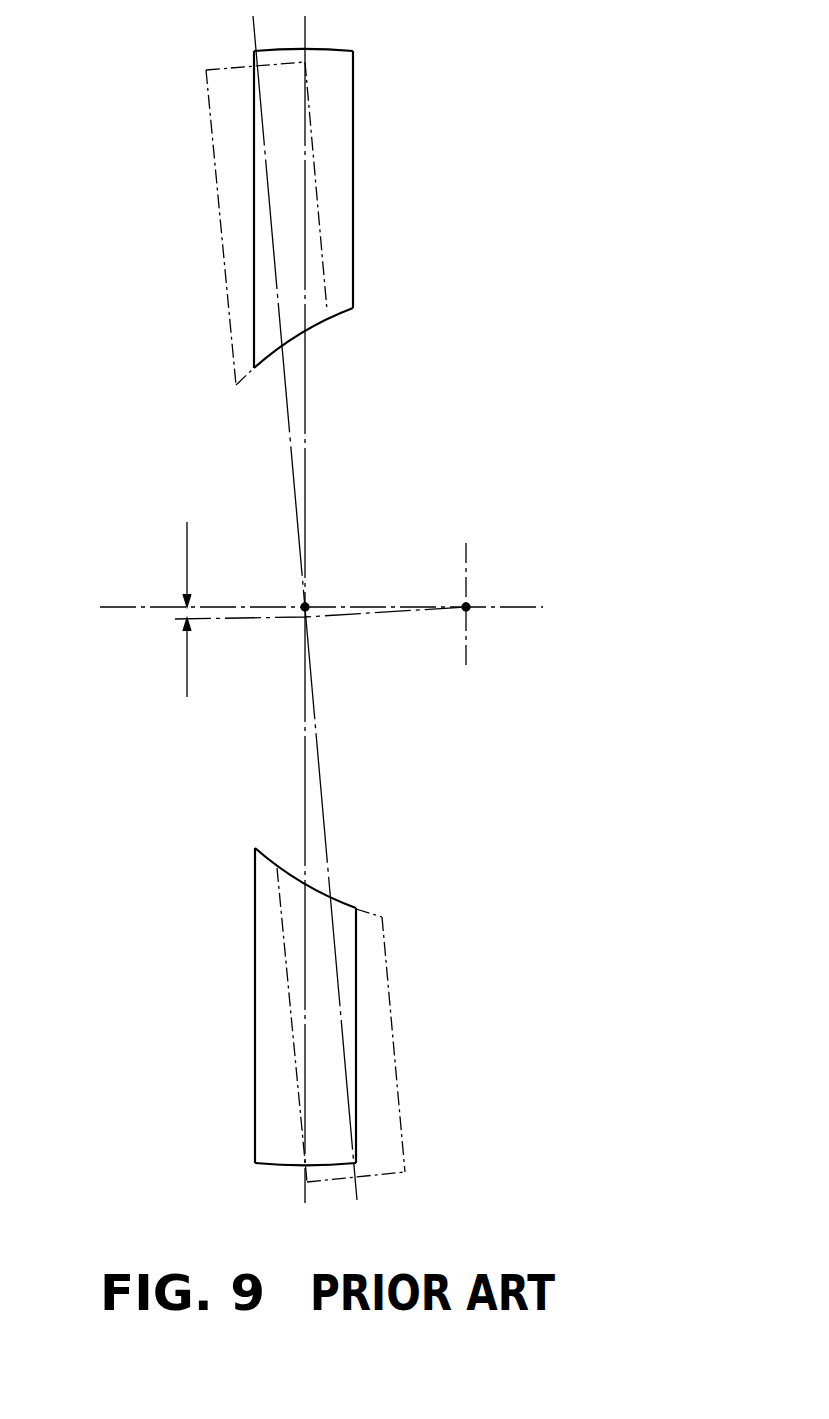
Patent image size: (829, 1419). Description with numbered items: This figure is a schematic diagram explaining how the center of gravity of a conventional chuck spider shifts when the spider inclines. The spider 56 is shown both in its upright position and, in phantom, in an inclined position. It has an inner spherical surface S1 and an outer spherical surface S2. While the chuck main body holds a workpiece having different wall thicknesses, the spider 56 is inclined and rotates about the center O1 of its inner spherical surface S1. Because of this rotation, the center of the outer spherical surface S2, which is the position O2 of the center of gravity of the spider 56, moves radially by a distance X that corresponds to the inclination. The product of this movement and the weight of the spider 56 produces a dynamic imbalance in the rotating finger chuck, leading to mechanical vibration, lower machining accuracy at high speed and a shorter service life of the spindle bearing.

The spider 56 is at (354, 157).
The inner spherical surface S1 is at (320, 322).
The outer spherical surface S2 is at (336, 50).
The center of inner spherical surface O1 is at (466, 607).
The center of outer spherical surface O2 is at (305, 607).
The distance X is at (180, 612).